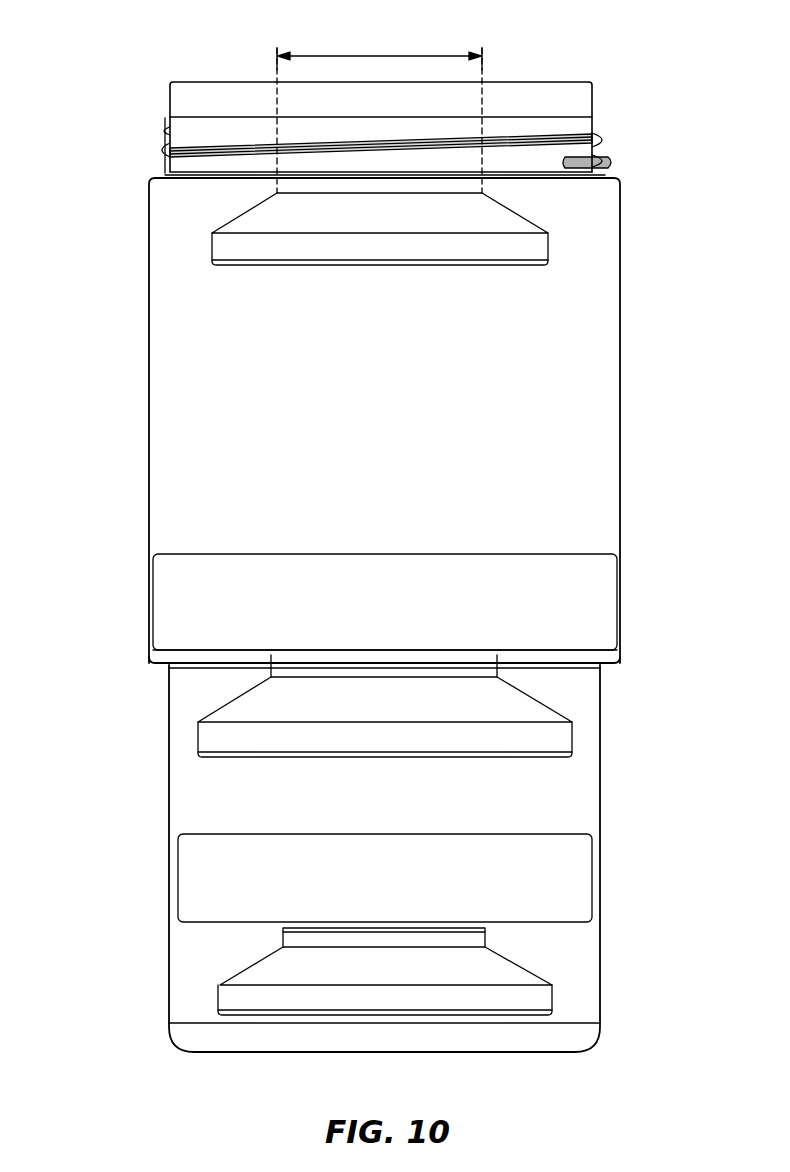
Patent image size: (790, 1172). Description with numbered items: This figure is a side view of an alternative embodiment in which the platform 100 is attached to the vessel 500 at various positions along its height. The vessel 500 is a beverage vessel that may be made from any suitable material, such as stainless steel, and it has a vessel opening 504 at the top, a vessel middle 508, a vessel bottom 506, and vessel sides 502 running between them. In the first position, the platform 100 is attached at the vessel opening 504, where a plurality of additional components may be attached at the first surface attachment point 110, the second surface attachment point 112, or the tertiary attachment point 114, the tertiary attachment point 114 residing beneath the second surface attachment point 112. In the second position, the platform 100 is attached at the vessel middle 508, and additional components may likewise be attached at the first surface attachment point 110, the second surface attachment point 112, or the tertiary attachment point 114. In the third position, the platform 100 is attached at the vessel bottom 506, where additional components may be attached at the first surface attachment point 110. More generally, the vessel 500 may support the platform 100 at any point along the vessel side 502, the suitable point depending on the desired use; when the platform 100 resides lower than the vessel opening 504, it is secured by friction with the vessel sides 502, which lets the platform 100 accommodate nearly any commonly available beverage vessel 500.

The platform 100 is at (374, 512).
The first surface attachment point 110 is at (350, 56).
The second surface attachment point 112 is at (276, 193).
The tertiary attachment point 114 is at (543, 253).
The vessel 500 is at (370, 531).
The vessel side 502 is at (130, 502).
The vessel opening 504 is at (598, 128).
The vessel bottom 506 is at (175, 1031).
The vessel middle 508 is at (150, 660).